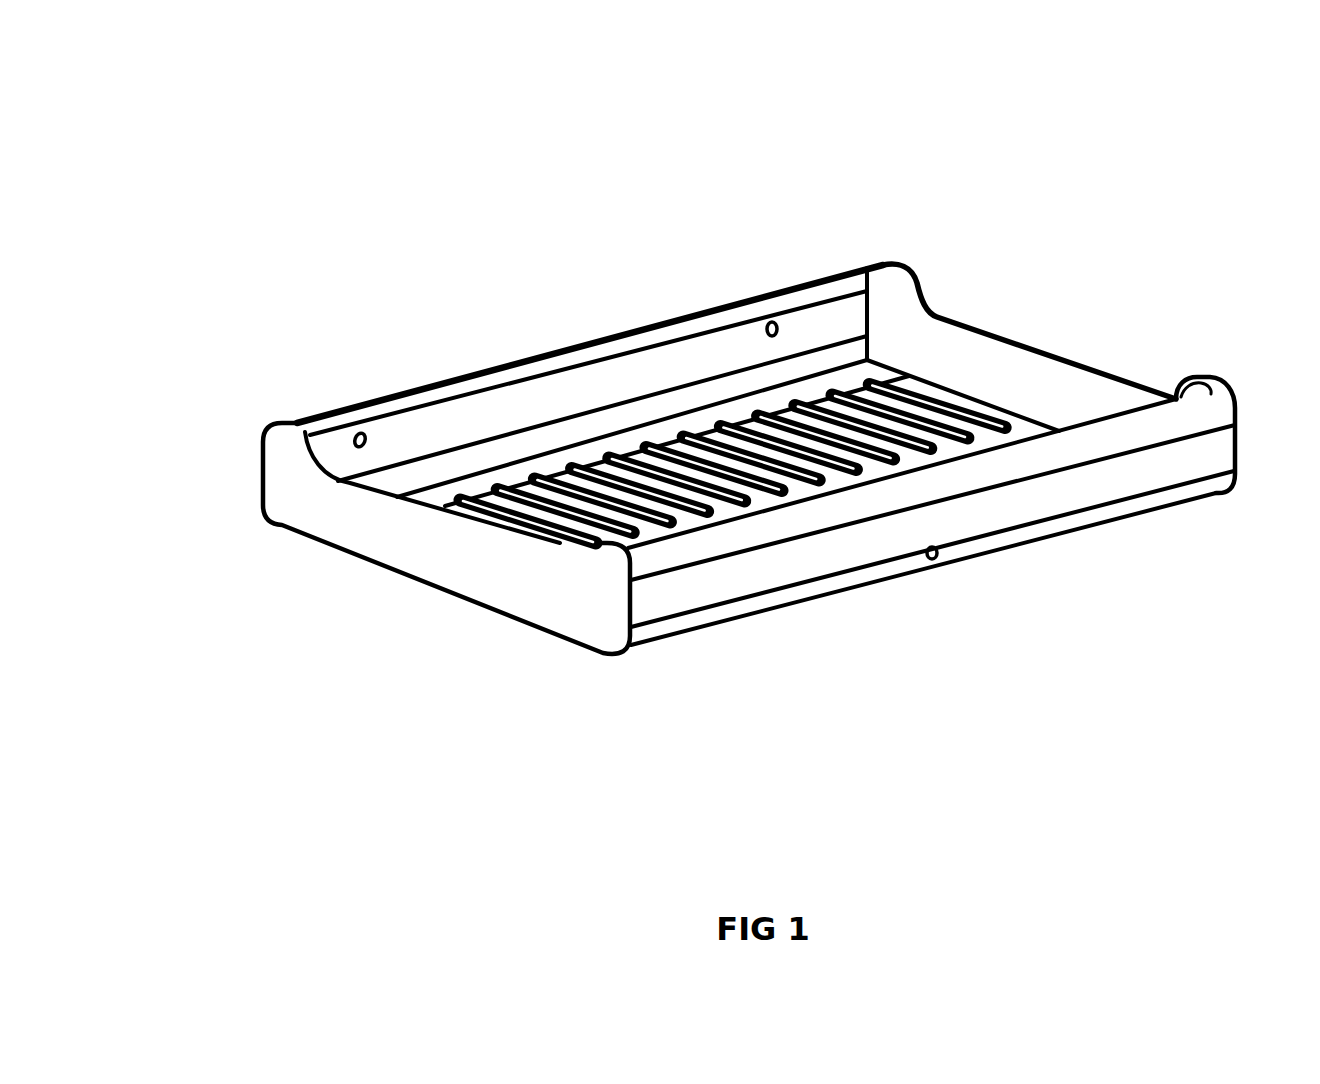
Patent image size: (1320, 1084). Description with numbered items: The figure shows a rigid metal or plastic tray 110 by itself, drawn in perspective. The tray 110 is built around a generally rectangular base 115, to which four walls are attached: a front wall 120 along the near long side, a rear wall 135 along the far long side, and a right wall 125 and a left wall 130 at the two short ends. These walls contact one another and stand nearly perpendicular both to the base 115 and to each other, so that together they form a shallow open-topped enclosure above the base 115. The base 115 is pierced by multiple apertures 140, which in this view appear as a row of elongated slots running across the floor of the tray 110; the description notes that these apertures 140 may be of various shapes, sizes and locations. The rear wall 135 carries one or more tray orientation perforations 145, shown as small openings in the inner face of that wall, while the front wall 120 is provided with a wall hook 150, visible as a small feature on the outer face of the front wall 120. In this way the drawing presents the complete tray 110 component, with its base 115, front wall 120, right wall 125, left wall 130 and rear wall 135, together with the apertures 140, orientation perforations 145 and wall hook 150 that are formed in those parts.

The tray 110 is at (532, 268).
The base 115 is at (573, 450).
The front wall 120 is at (762, 563).
The right wall 125 is at (998, 373).
The left wall 130 is at (307, 509).
The rear wall 135 is at (680, 356).
The apertures 140 is at (590, 513).
The tray orientation perforations 145 is at (787, 313).
The wall hook 150 is at (943, 560).